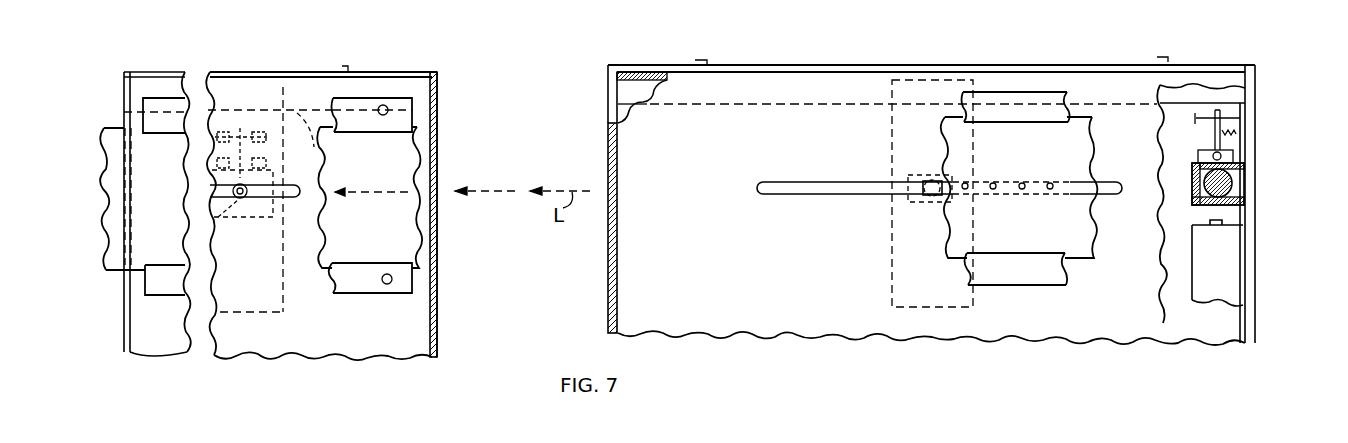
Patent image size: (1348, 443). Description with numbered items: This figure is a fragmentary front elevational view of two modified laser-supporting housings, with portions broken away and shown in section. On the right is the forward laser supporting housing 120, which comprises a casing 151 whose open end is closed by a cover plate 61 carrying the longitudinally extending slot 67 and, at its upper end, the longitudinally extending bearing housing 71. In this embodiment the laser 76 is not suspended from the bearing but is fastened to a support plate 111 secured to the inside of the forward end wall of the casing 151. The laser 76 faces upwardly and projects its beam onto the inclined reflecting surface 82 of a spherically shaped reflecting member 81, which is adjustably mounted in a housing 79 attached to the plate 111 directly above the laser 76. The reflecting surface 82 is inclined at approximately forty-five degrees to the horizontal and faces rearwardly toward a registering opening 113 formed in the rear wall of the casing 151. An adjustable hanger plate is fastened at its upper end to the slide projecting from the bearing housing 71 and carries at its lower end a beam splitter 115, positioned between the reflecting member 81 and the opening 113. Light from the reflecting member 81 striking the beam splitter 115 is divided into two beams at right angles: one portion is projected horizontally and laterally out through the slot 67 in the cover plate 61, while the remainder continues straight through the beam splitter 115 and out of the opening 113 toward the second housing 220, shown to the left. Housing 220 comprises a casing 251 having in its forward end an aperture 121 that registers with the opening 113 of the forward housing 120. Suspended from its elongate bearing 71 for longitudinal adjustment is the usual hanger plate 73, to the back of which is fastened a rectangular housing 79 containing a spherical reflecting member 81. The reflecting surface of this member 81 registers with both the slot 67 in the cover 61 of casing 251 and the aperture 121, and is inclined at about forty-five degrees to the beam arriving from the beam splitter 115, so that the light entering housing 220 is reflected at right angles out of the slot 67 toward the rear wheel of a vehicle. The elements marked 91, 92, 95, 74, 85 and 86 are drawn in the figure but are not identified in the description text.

The housing 220 is at (394, 66).
The casing 251 is at (438, 88).
The aperture 121 is at (438, 188).
The cover plate 61 is at (415, 333).
The hanger plate 73 is at (245, 313).
The bearing housing 71 is at (322, 152).
The upper block 91 is at (336, 100).
The lower block 92 is at (358, 287).
The slide member 95 is at (412, 248).
The slot 67 is at (308, 197).
The reflecting member 81 is at (232, 199).
The housing 79 is at (250, 217).
The front laser supporting housing 120 is at (1215, 60).
The opening 113 is at (612, 185).
The support plate 111 is at (1232, 318).
The casing 151 is at (1060, 66).
The shaft end 74 is at (917, 190).
The beam splitter 115 is at (918, 176).
The lever 85 is at (1193, 119).
The pivot block 86 is at (1237, 153).
The reflecting surface 82 is at (1197, 190).
The laser 76 is at (1228, 263).